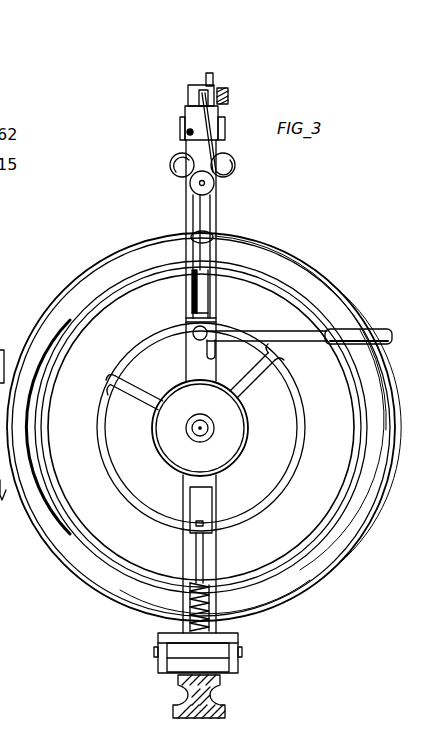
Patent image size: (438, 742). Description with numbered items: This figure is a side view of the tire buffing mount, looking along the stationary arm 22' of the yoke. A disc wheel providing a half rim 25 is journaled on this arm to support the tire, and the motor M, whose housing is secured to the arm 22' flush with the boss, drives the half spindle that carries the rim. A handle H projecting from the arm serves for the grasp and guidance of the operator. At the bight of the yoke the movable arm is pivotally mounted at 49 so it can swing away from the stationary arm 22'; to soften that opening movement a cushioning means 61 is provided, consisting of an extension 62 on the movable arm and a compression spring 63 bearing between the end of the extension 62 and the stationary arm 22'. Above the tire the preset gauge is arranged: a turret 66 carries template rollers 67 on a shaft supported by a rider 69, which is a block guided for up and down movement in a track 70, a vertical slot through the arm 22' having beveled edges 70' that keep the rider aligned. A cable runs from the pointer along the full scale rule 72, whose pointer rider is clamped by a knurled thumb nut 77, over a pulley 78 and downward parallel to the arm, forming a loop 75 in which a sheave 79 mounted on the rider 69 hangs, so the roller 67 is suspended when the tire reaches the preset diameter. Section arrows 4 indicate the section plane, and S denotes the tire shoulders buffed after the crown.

The shoulders S is at (272, 272).
The handles H is at (376, 331).
The motor M is at (210, 465).
The section line 4- 4 is at (90, 370).
The half rim 25 is at (118, 472).
The stationary arm 22' is at (175, 554).
The cushioning means 61 is at (186, 622).
The extension 62 is at (154, 662).
The compression spring 63 is at (216, 622).
The pivot 49 is at (242, 654).
The rider 69 is at (198, 205).
The track 70 is at (225, 247).
The beveled edges 70' is at (184, 291).
The full scale rule 72 is at (210, 74).
The knurled thumb nut 77 is at (228, 95).
The pulley 78 is at (192, 105).
The loop 75 is at (188, 158).
The roller 67 is at (228, 166).
The turret 66 is at (223, 178).
The sheave 79 is at (190, 183).